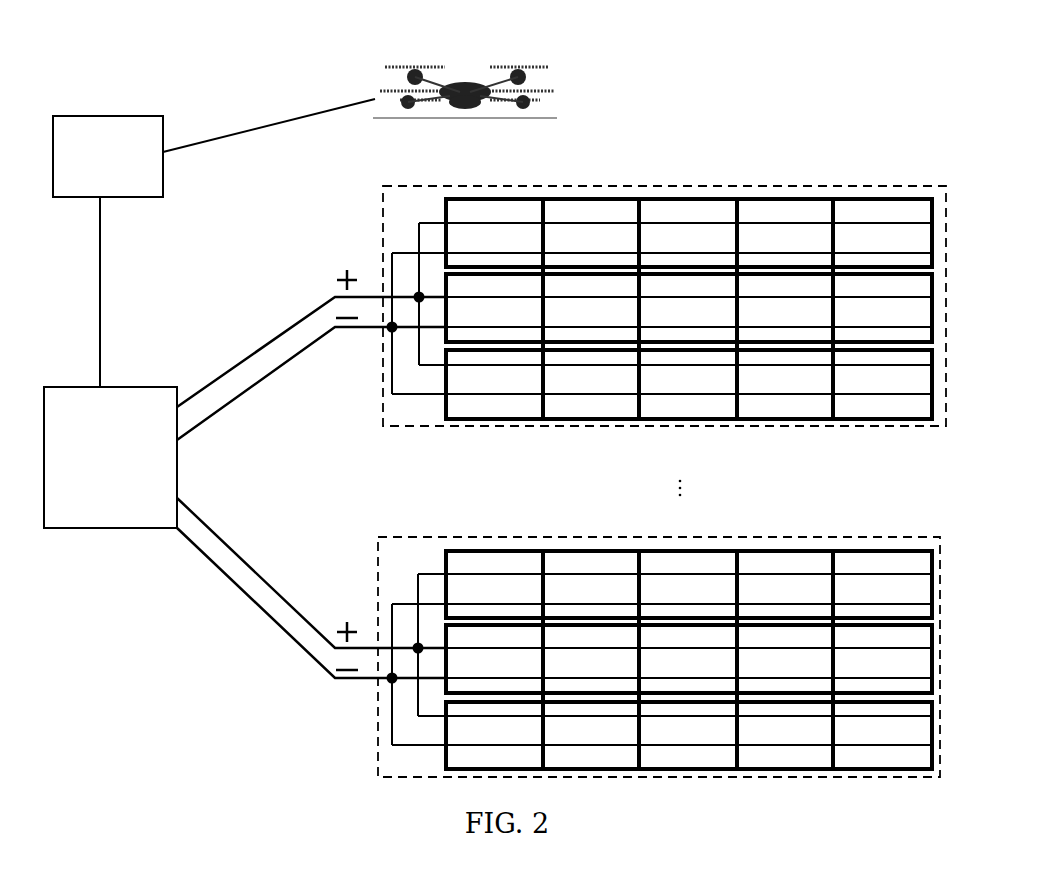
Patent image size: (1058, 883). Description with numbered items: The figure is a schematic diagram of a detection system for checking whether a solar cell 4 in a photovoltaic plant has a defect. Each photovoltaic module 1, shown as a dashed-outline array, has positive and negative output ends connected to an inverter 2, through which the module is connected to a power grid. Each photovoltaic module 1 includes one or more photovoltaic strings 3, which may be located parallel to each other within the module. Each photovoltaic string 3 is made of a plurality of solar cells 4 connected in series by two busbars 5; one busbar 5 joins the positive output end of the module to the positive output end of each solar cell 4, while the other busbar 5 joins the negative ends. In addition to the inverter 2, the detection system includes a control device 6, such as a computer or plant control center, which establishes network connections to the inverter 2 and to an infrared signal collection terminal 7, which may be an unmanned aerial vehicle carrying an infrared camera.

The photovoltaic module 1 is at (602, 187).
The inverter 2 is at (124, 386).
The photovoltaic string 3 is at (742, 196).
The solar cell 4 is at (788, 215).
The busbar 5 is at (883, 220).
The control device 6 is at (115, 117).
The infrared signal collection terminal 7 is at (458, 62).